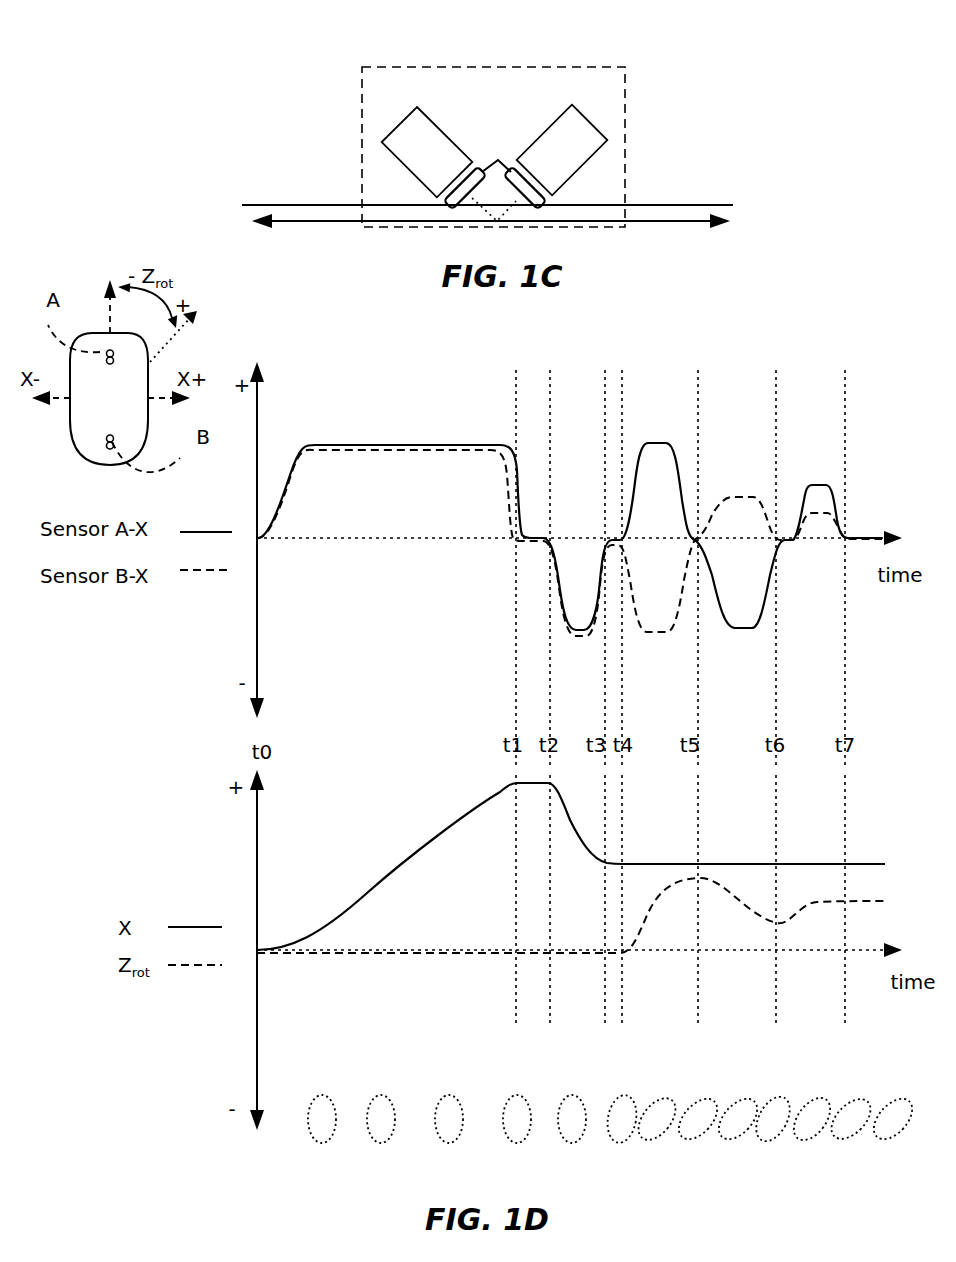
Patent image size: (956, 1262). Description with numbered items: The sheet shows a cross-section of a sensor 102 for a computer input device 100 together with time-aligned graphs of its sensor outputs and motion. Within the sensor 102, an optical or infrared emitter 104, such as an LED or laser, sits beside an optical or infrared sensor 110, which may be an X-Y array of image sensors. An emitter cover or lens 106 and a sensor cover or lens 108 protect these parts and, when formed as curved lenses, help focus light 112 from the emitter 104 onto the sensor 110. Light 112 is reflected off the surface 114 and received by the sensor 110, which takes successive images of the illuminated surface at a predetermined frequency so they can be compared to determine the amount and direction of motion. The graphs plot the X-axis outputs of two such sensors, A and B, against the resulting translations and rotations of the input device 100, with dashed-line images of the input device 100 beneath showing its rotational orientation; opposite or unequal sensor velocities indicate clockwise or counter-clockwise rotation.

In FIG. 1D, the computer input device 100 is at (386, 1142).
In FIG. 1C, the sensor 102 is at (350, 90).
In FIG. 1C, the optical or infrared emitter 104 is at (427, 152).
In FIG. 1C, the emitter cover or lens 106 is at (481, 172).
In FIG. 1C, the sensor cover or lens 108 is at (511, 172).
In FIG. 1C, the optical or infrared sensor 110 is at (562, 150).
In FIG. 1C, the light 112 is at (513, 203).
In FIG. 1C, the surface 114 is at (312, 222).